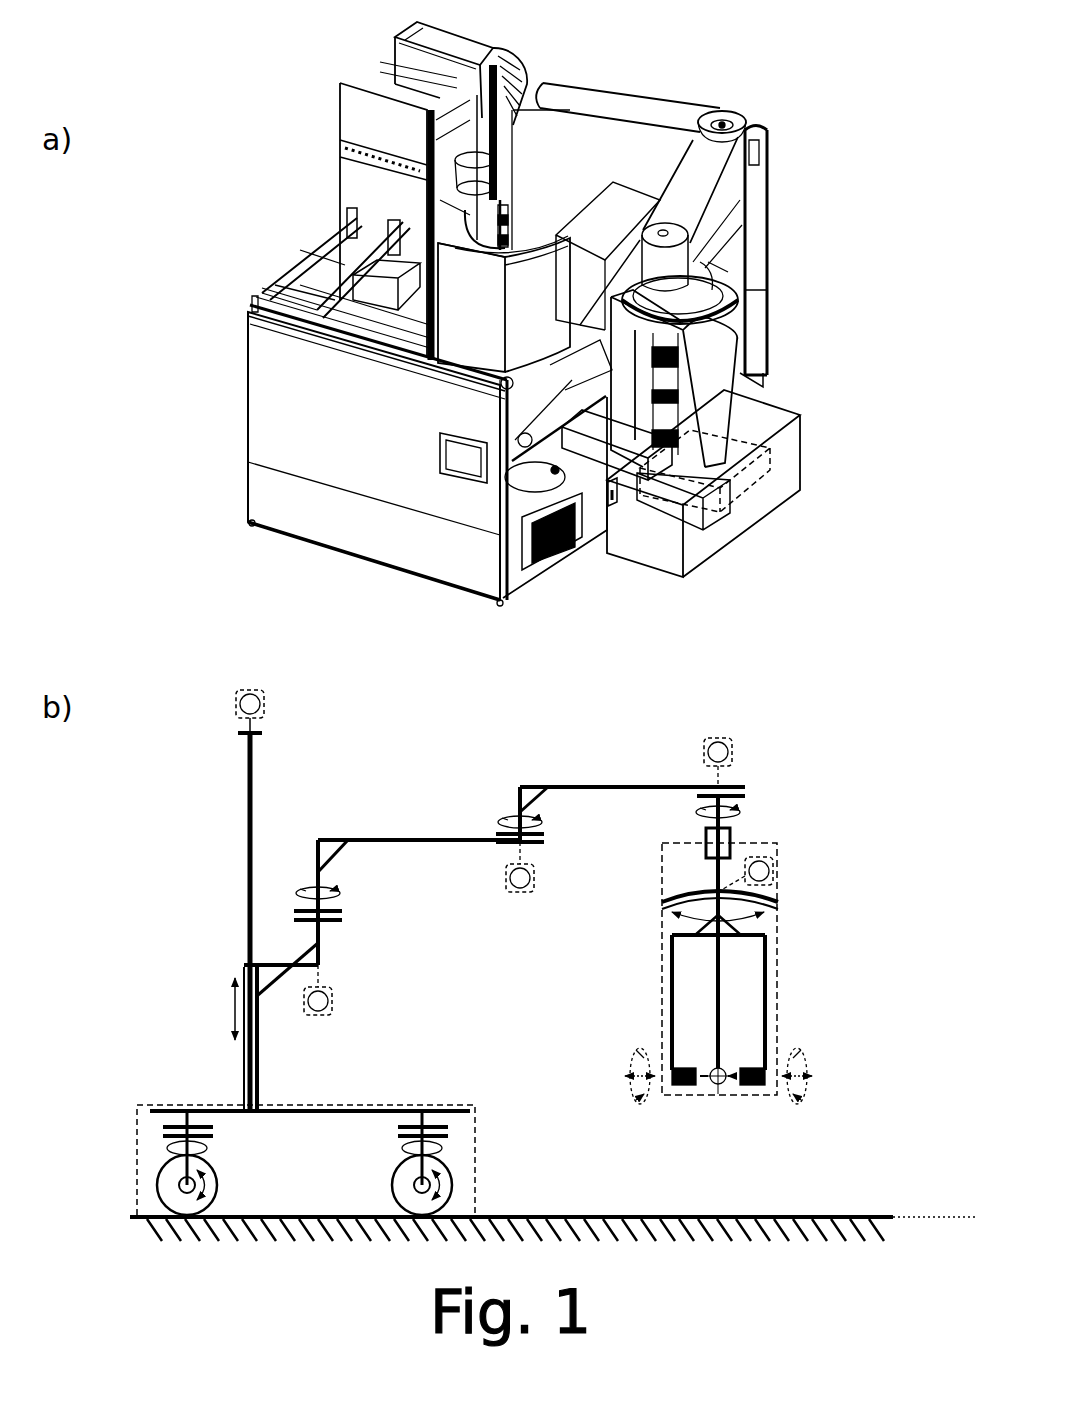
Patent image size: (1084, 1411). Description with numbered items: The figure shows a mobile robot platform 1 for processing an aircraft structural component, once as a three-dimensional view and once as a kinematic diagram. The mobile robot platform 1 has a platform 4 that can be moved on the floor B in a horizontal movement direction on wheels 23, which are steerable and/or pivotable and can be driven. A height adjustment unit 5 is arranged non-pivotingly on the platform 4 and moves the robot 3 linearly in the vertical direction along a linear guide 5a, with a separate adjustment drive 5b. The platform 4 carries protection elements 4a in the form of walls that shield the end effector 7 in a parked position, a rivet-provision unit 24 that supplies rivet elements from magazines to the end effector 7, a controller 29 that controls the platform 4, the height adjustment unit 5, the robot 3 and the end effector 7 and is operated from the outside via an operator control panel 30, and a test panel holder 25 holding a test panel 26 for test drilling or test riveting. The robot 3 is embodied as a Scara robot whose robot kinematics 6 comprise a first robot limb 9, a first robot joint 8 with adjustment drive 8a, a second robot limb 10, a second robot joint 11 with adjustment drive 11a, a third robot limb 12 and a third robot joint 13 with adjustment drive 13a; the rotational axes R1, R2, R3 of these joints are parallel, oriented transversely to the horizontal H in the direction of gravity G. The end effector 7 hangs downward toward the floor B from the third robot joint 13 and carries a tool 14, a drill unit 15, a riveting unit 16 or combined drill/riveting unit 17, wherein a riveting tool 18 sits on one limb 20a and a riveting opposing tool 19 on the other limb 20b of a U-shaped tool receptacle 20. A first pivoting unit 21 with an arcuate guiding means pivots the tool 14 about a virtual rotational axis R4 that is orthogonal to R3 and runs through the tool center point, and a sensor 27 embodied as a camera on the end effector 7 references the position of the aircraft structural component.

The mobile robot platform 1 is at (194, 104).
The robot 3 is at (782, 136).
The platform 4 is at (345, 693).
The protection elements 4a is at (236, 437).
The height adjustment unit 5 is at (324, 114).
The linear guide 5a is at (236, 962).
The adjustment drive 5b is at (265, 712).
The robot kinematics 6 is at (635, 80).
The end effector 7 is at (773, 302).
The first robot joint 8 is at (343, 921).
The adjustment drive 8a is at (333, 1005).
The first robot limb 9 is at (320, 958).
The second robot limb 10 is at (400, 840).
The second robot joint 11 is at (545, 838).
The adjustment drive 11a is at (535, 880).
The third robot limb 12 is at (580, 787).
The third robot joint 13 is at (745, 793).
The adjustment drive 13a is at (733, 752).
The tool 14 is at (711, 1110).
The drill unit 15 is at (745, 484).
The riveting unit 16 is at (713, 515).
The drill/riveting unit 17 is at (762, 506).
The riveting tool 18 is at (733, 508).
The riveting opposing tool 19 is at (605, 455).
The U-shaped tool receptacle 20 is at (748, 372).
The limb 20a is at (768, 975).
The limb 20b is at (672, 1008).
The first pivoting unit 21 is at (706, 909).
The wheels 23 is at (374, 1170).
The rivet-provision unit 24 is at (345, 335).
The test panel holder 25 is at (570, 363).
The test panel 26 is at (583, 335).
The sensor 27 is at (618, 496).
The controller 29 is at (387, 263).
The operator control panel 30 is at (458, 453).
The rotational axis R1 is at (318, 840).
The rotational axis R2 is at (520, 787).
The rotational axis R3 is at (718, 738).
The rotational axis R4 is at (722, 1090).
The direction of gravity G is at (905, 1082).
The floor B is at (850, 1216).
The horizontal H is at (930, 1222).